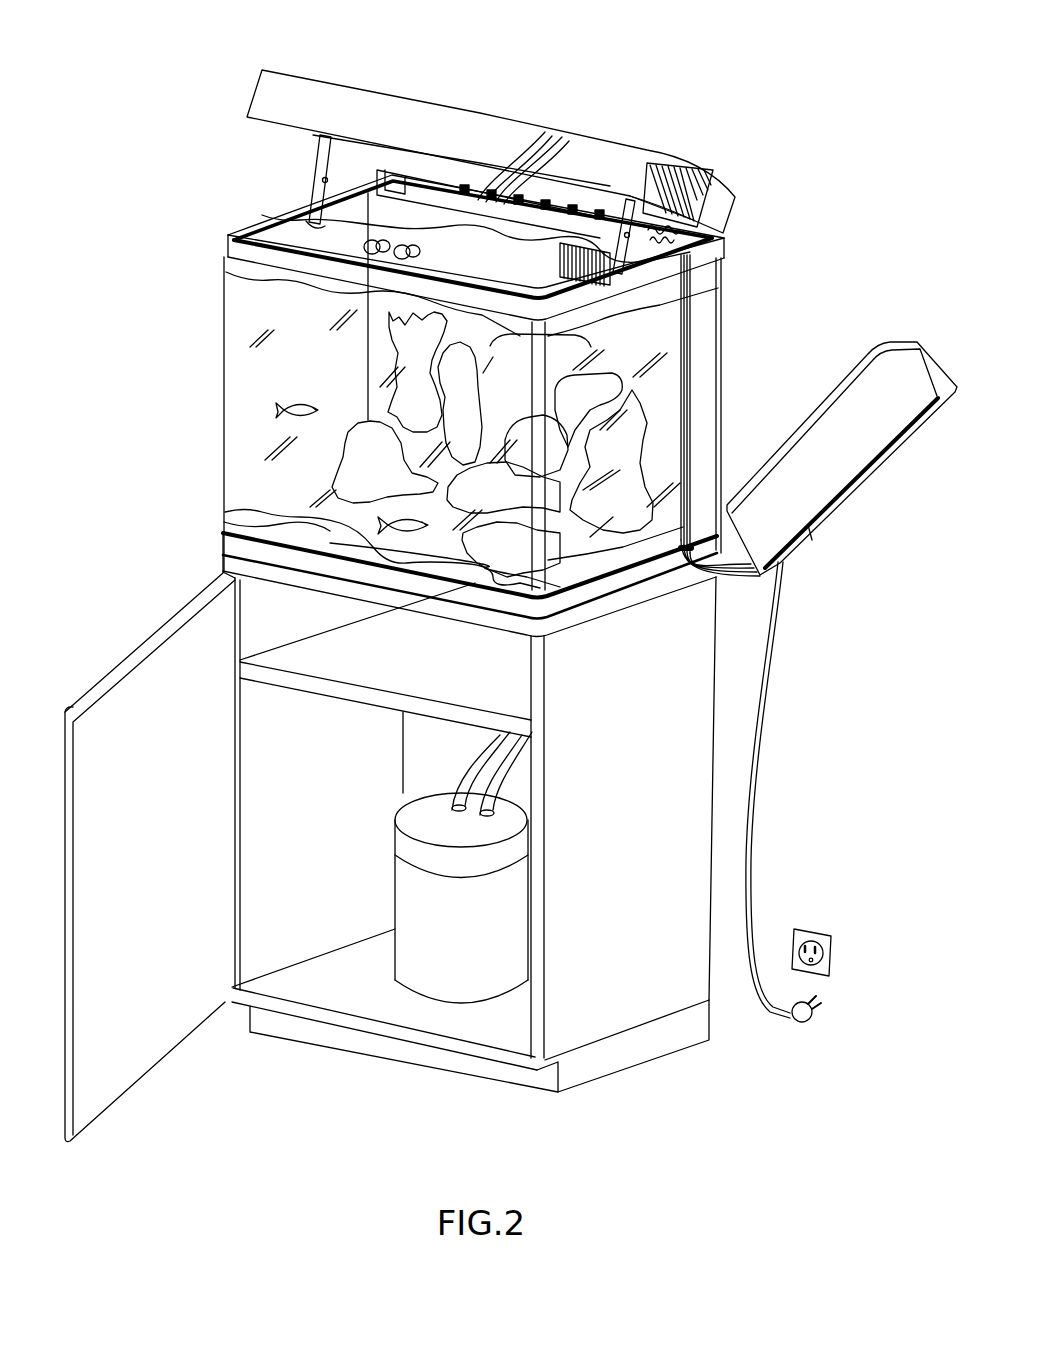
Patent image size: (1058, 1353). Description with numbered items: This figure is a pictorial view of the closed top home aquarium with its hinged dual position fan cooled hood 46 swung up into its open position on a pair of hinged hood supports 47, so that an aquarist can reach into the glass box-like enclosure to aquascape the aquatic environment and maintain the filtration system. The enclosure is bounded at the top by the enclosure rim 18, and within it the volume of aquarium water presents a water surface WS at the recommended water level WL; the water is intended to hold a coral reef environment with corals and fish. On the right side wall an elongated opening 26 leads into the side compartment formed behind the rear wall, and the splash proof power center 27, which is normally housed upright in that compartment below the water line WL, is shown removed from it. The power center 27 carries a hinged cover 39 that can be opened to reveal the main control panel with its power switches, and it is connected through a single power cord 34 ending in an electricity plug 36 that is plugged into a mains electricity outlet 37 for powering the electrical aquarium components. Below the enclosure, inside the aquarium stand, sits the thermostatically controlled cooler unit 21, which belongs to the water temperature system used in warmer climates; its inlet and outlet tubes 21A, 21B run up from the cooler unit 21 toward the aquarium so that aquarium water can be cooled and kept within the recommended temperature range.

The hinged dual position fan cooled hood 46 is at (330, 105).
The hinged hood supports 47 is at (321, 160).
The water surface WS is at (318, 247).
The enclosure rim 18 is at (248, 223).
The recommended water level WL is at (228, 268).
The elongated opening 26 is at (707, 290).
The inlet tube 21A is at (493, 183).
The outlet tube 21B is at (497, 183).
The splash proof power center 27 is at (805, 396).
The hinged cover 39 is at (810, 530).
The power cord 34 is at (750, 803).
The mains electricity outlet 37 is at (813, 940).
The electricity plug 36 is at (814, 1019).
The thermostatically controlled cooler unit 21 is at (452, 927).